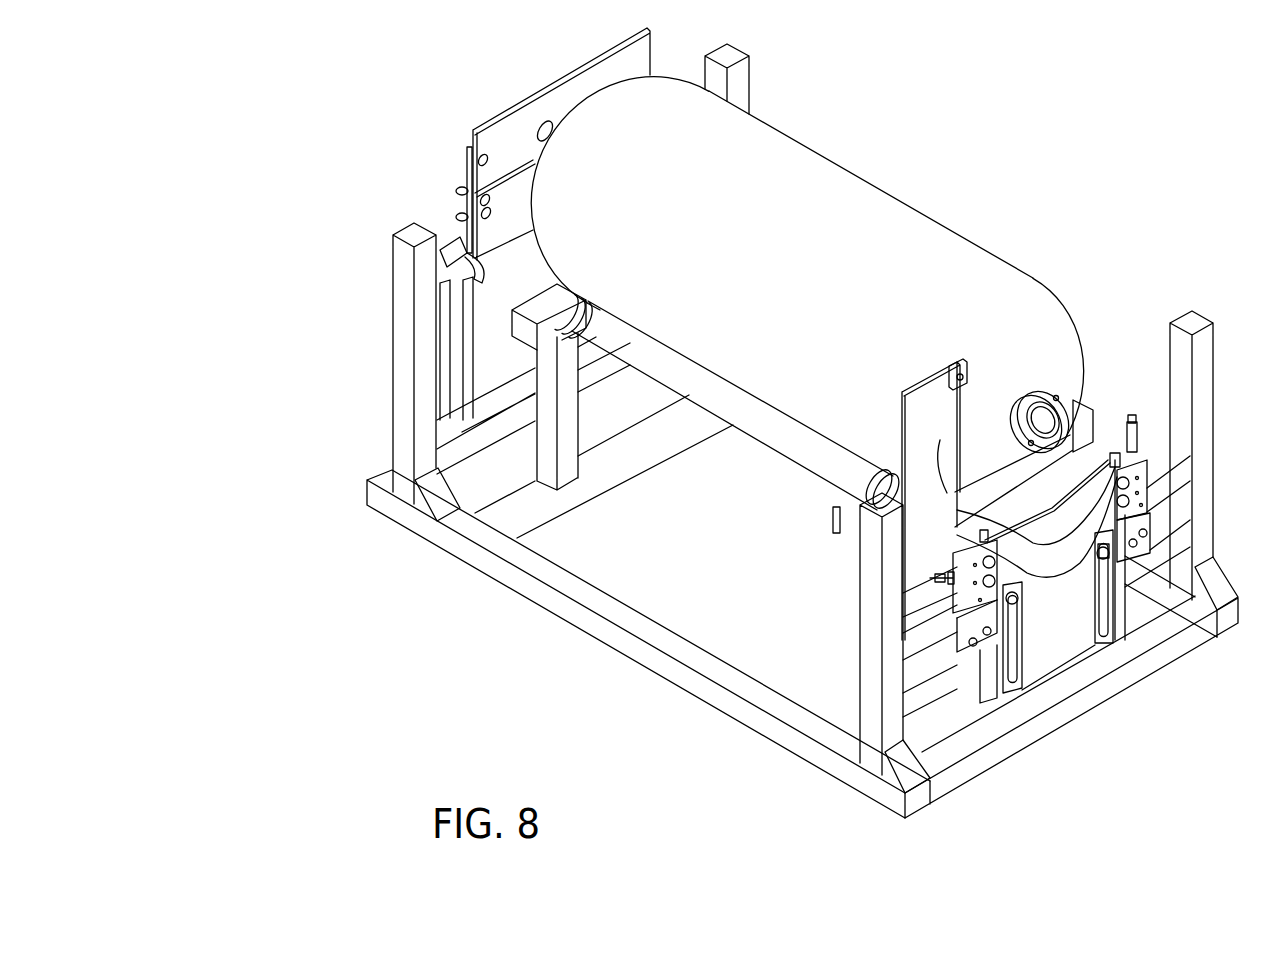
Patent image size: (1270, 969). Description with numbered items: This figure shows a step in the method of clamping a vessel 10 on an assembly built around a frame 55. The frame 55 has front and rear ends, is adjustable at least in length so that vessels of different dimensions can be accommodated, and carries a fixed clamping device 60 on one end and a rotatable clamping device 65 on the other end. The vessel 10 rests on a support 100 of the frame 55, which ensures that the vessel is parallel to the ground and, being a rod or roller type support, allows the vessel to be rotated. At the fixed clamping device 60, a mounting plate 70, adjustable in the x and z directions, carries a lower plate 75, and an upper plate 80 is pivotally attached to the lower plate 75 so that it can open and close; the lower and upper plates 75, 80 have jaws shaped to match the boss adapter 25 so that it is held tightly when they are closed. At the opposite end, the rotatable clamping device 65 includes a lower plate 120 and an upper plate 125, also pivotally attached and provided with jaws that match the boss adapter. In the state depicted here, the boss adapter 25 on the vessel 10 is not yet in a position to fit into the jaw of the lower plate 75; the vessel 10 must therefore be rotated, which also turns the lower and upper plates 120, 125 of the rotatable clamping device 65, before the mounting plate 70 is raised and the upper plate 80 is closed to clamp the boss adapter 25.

The vessel 10 is at (890, 195).
The boss adapter 25 is at (1035, 405).
The frame 55 is at (578, 627).
The fixed clamping device 60 is at (1056, 719).
The rotatable clamping device 65 is at (345, 227).
The mounting plate 70 is at (1074, 646).
The lower plate 75 is at (1046, 548).
The upper plate 80 is at (923, 376).
The support 100 is at (795, 462).
The lower plate 120 is at (522, 203).
The upper plate 125 is at (490, 124).